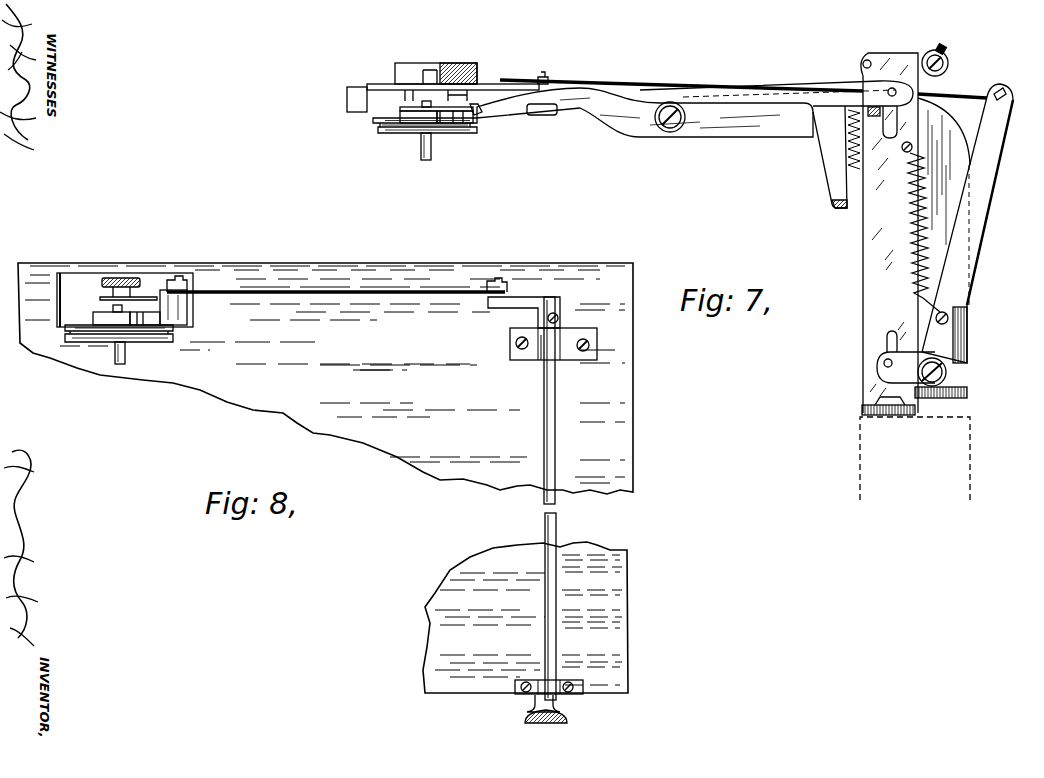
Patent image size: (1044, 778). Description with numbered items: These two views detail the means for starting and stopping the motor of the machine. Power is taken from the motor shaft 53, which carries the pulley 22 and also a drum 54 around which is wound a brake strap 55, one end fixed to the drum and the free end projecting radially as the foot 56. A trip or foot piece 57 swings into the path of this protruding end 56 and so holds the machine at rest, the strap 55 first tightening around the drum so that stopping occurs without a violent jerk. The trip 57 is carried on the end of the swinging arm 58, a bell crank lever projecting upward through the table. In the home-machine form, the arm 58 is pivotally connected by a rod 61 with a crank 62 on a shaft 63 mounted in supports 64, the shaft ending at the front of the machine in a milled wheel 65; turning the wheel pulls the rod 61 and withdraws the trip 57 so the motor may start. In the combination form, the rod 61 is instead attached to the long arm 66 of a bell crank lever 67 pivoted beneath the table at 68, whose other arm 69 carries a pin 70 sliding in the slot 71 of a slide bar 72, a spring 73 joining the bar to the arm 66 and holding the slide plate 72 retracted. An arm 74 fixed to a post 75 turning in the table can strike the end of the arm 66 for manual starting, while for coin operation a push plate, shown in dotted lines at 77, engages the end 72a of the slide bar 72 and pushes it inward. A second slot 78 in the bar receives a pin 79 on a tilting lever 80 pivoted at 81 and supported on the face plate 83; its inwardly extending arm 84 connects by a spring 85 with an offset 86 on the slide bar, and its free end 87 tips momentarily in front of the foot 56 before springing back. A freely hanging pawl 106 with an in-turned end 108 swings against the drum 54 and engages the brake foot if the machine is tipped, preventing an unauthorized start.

In FIG. 7, the pulley 22 is at (452, 134).
In FIG. 8, the pulley 22 is at (140, 343).
In FIG. 7, the shaft 53 is at (426, 160).
In FIG. 8, the shaft 53 is at (119, 365).
In FIG. 7, the drum 54 is at (405, 108).
In FIG. 8, the drum 54 is at (107, 318).
In FIG. 7, the strap 55 is at (400, 116).
In FIG. 8, the strap 55 is at (117, 279).
In FIG. 7, the protruding end 56 is at (474, 120).
In FIG. 8, the protruding end 56 is at (155, 318).
In FIG. 7, the trip 57 is at (546, 116).
In FIG. 8, the trip 57 is at (182, 295).
In FIG. 7, the swinging arm 58 is at (540, 79).
In FIG. 8, the swinging arm 58 is at (170, 286).
In FIG. 7, the rod 61 is at (648, 80).
In FIG. 8, the rod 61 is at (296, 290).
In FIG. 8, the crank 62 is at (519, 297).
In FIG. 8, the shaft 63 is at (557, 522).
In FIG. 8, the supports 64 is at (570, 362).
In FIG. 8, the milled wheel 65 is at (525, 717).
In FIG. 7, the long arm 66 is at (990, 200).
In FIG. 7, the bell crank lever 67 is at (948, 375).
In FIG. 7, the pivot 68 is at (968, 396).
In FIG. 7, the arm 69 is at (877, 373).
In FIG. 7, the pin 70 is at (884, 362).
In FIG. 7, the slot 71 is at (887, 340).
In FIG. 7, the slide bar 72 is at (870, 260).
In FIG. 7, the end of slide bar 72a is at (862, 410).
In FIG. 7, the spring 73 is at (940, 283).
In FIG. 7, the arm 74 is at (947, 52).
In FIG. 7, the post 75 is at (930, 51).
In FIG. 7, the push plate 77 is at (934, 420).
In FIG. 7, the second slot 78 is at (877, 104).
In FIG. 7, the pin 79 is at (891, 88).
In FIG. 7, the tilting lever 80 is at (760, 128).
In FIG. 7, the pivot 81 is at (672, 132).
In FIG. 7, the face plate 83 is at (967, 346).
In FIG. 7, the inwardly extending arm 84 is at (832, 180).
In FIG. 7, the spring 85 is at (847, 118).
In FIG. 7, the offset 86 is at (863, 56).
In FIG. 7, the free end of lever 87 is at (466, 105).
In FIG. 7, the pawl 106 is at (396, 74).
In FIG. 7, the in-turned end 108 is at (347, 101).